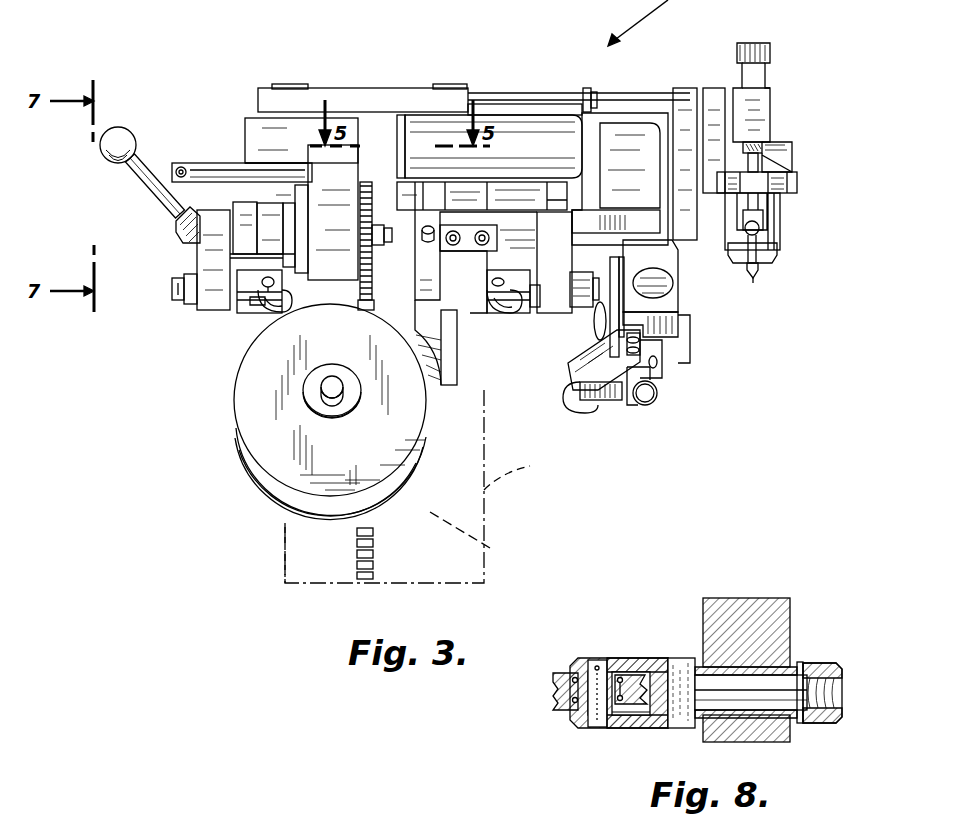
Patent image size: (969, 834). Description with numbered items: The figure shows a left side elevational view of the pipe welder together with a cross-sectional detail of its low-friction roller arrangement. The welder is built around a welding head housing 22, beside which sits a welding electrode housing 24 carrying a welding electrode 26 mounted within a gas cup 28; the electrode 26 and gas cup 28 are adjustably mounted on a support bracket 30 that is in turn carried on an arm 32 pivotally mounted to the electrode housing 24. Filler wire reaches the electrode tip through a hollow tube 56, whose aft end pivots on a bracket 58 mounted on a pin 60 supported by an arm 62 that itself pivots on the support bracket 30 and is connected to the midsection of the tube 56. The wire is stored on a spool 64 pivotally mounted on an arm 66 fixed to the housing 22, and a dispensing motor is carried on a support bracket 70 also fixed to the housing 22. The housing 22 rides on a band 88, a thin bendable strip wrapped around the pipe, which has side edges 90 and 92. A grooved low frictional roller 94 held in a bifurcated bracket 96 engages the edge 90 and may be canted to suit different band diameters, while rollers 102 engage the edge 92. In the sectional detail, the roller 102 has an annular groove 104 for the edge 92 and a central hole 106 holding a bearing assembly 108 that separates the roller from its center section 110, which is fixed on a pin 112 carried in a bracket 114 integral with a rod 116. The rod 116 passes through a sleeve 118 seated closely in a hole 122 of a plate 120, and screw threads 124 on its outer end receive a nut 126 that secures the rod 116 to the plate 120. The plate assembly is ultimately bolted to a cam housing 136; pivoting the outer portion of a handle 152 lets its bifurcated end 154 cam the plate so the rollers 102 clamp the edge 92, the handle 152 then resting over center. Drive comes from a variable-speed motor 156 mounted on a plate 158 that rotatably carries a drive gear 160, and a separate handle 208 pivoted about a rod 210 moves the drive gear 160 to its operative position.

In FIG. 3, the welding head housing 22 is at (538, 222).
In FIG. 3, the welding electrode housing 24 is at (710, 85).
In FIG. 3, the welding electrode 26 is at (760, 275).
In FIG. 3, the gas cup 28 is at (772, 267).
In FIG. 3, the support bracket 30 is at (720, 150).
In FIG. 3, the arm 32 is at (688, 120).
In FIG. 3, the hollow tube 56 is at (778, 250).
In FIG. 3, the bracket 58 is at (770, 223).
In FIG. 3, the pin 60 is at (790, 165).
In FIG. 3, the arm 62 is at (780, 200).
In FIG. 3, the spool 64 is at (250, 387).
In FIG. 3, the arm 66 is at (455, 385).
In FIG. 3, the support bracket 70 is at (685, 295).
In FIG. 3, the band 88 is at (490, 549).
In FIG. 3, the side edge 90 is at (490, 485).
In FIG. 3, the side edge 92 is at (285, 545).
In FIG. 3, the low frictional roller 94 is at (522, 313).
In FIG. 3, the bifurcated bracket 96 is at (503, 313).
In FIG. 3, the roller 102 is at (270, 313).
In FIG. 8, the roller 102 is at (632, 715).
In FIG. 8, the annular groove 104 is at (650, 667).
In FIG. 8, the central hole 106 is at (578, 720).
In FIG. 8, the bearing assembly 108 is at (575, 680).
In FIG. 8, the center section 110 is at (625, 668).
In FIG. 3, the pin 112 is at (257, 313).
In FIG. 8, the pin 112 is at (607, 663).
In FIG. 3, the bracket 114 is at (237, 300).
In FIG. 8, the bracket 114 is at (680, 717).
In FIG. 8, the rod 116 is at (765, 685).
In FIG. 8, the sleeve 118 is at (745, 710).
In FIG. 8, the plate 120 is at (740, 605).
In FIG. 8, the hole 122 is at (772, 710).
In FIG. 8, the screw threads 124 is at (838, 685).
In FIG. 3, the nut 126 is at (176, 296).
In FIG. 8, the nut 126 is at (825, 657).
In FIG. 3, the cam housing 136 is at (198, 258).
In FIG. 3, the handle 152 is at (145, 160).
In FIG. 3, the bifurcated end 154 is at (193, 235).
In FIG. 3, the motor 156 is at (422, 132).
In FIG. 3, the plate 158 is at (310, 150).
In FIG. 3, the drive gear 160 is at (368, 175).
In FIG. 3, the handle 208 is at (165, 172).
In FIG. 3, the rod 210 is at (202, 178).